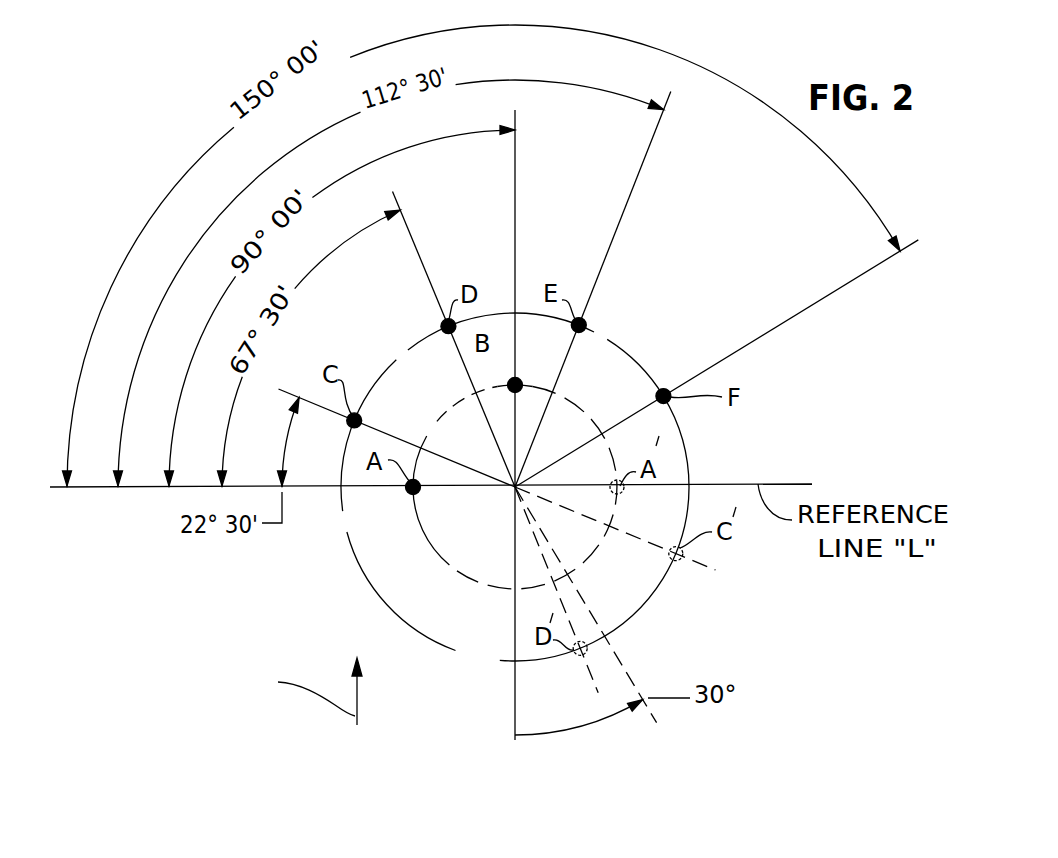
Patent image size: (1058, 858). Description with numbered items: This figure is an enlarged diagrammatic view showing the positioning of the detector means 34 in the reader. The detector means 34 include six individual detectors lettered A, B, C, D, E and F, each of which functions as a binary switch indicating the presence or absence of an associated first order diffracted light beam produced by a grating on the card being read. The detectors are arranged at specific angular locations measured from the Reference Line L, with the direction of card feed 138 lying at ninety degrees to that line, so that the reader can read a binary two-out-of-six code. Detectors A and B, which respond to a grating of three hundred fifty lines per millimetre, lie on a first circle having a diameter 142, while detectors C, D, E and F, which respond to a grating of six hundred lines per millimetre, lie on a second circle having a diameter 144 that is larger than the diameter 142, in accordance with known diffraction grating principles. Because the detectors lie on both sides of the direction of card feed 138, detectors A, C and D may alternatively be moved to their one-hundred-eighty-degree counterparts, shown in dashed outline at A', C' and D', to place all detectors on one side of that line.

The detector means 34 is at (713, 340).
The direction of card feed 138 is at (357, 692).
The diameter of first circle 142 is at (628, 375).
The diameter of second circle 144 is at (608, 340).